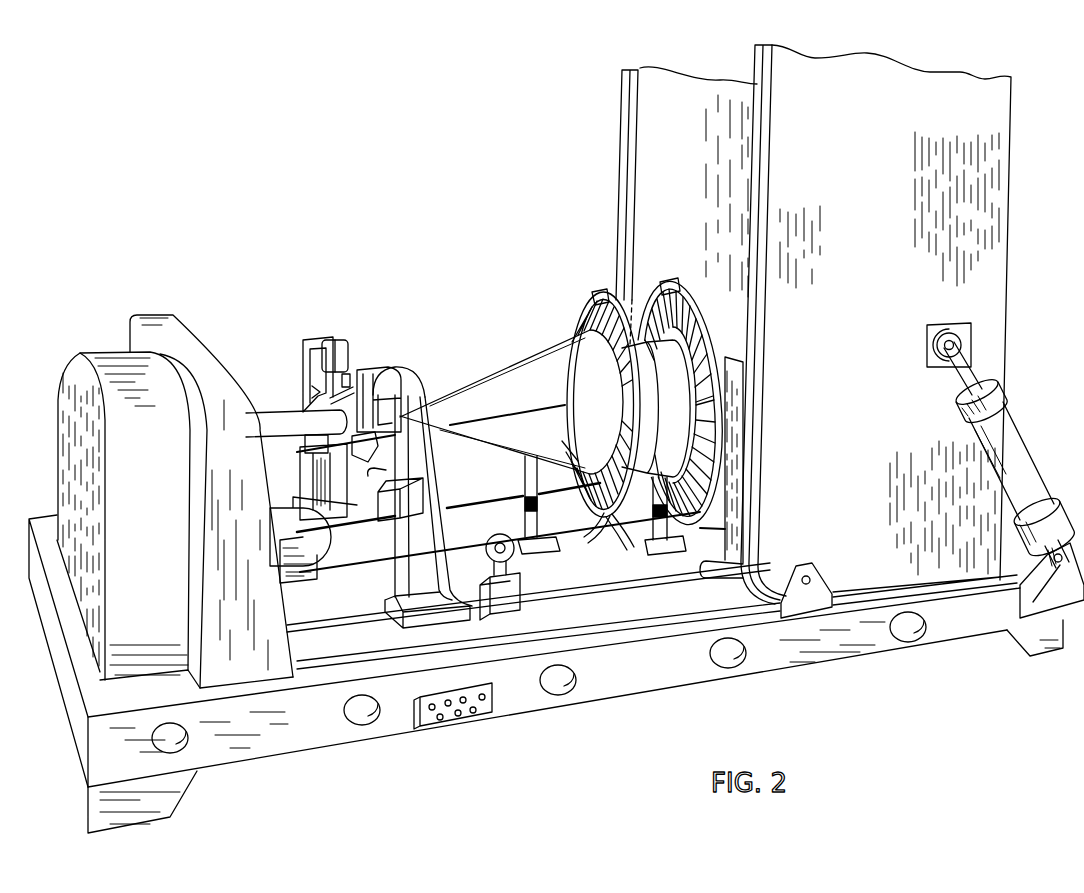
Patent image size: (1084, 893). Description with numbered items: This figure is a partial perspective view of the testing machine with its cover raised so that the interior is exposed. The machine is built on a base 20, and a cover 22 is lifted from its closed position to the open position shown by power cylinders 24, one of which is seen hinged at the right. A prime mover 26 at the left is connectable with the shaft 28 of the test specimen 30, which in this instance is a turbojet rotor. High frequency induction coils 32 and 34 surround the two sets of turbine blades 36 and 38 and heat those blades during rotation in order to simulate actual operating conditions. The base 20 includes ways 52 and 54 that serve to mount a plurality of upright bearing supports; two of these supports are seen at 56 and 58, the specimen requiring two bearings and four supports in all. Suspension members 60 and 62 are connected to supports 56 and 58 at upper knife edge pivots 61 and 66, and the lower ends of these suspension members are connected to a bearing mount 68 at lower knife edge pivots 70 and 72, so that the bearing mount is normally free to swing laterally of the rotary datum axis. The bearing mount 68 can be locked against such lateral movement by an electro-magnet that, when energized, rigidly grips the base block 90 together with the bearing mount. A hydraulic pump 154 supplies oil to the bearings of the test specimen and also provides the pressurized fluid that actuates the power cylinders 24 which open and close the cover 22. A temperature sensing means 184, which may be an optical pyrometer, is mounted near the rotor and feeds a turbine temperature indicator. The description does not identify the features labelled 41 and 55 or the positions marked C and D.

The base 20 is at (695, 691).
The cover 22 is at (1004, 284).
The power cylinders 24 is at (1021, 443).
The prime mover 26 is at (72, 396).
The shaft 28 is at (263, 423).
The test specimen 30 is at (504, 370).
The high frequency induction coil 32 is at (596, 290).
The high frequency induction coil 34 is at (671, 279).
The turbine blades 36 is at (583, 315).
The turbine blades 38 is at (688, 311).
The plates 41 is at (625, 158).
The way 52 is at (343, 628).
The way 54 is at (466, 503).
The terminal block 55 is at (465, 715).
The upright bearing support 56 is at (320, 442).
The upright bearing support 58 is at (410, 557).
The suspension member 60 is at (322, 377).
The upper knife edge pivot 61 is at (331, 342).
The suspension member 62 is at (382, 412).
The upper knife edge pivot 66 is at (377, 379).
The bearing mount 68 is at (349, 375).
The lower knife edge pivot 70 is at (315, 392).
The lower knife edge pivot 72 is at (360, 448).
The base block 90 is at (372, 471).
The hydraulic pump 154 is at (330, 541).
The temperature sensing means 184 is at (521, 605).
The support leg C is at (548, 551).
The support leg D is at (664, 548).